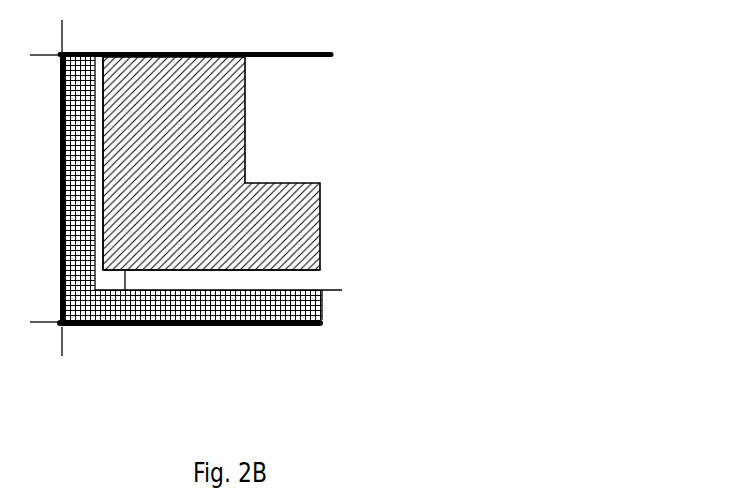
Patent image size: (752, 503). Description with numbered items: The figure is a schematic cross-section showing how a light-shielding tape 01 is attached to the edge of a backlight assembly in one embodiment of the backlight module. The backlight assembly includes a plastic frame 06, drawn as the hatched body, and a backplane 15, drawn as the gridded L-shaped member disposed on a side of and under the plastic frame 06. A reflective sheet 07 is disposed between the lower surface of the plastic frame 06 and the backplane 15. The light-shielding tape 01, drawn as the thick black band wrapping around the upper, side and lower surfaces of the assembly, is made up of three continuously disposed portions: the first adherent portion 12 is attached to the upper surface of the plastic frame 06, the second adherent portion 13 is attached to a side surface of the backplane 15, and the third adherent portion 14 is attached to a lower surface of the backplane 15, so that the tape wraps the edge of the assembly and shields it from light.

The light-shielding tape 01 is at (333, 54).
The plastic frame 06 is at (265, 215).
The backplane 15 is at (288, 303).
The reflective sheet 07 is at (147, 278).
The first adherent portion 12 is at (330, 34).
The second adherent portion 13 is at (40, 55).
The third adherent portion 14 is at (320, 345).